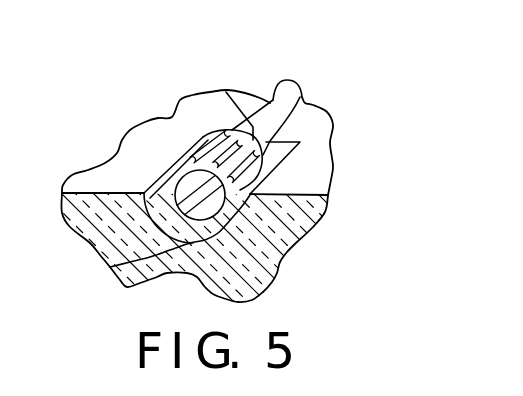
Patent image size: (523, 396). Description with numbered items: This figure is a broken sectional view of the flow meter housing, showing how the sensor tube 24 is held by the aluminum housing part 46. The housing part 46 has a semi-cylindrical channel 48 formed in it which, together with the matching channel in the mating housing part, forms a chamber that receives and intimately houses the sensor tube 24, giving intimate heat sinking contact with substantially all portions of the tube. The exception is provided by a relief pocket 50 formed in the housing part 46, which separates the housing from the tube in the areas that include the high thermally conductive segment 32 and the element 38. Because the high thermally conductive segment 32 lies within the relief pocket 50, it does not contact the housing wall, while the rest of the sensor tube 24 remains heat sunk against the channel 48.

The sensor tube 24 is at (273, 97).
The high thermally conductive segment 32 is at (226, 92).
The element 38 is at (217, 138).
The aluminum housing part 46 is at (307, 176).
The semi-cylindrical channel 48 is at (305, 95).
The relief pocket 50 is at (118, 265).